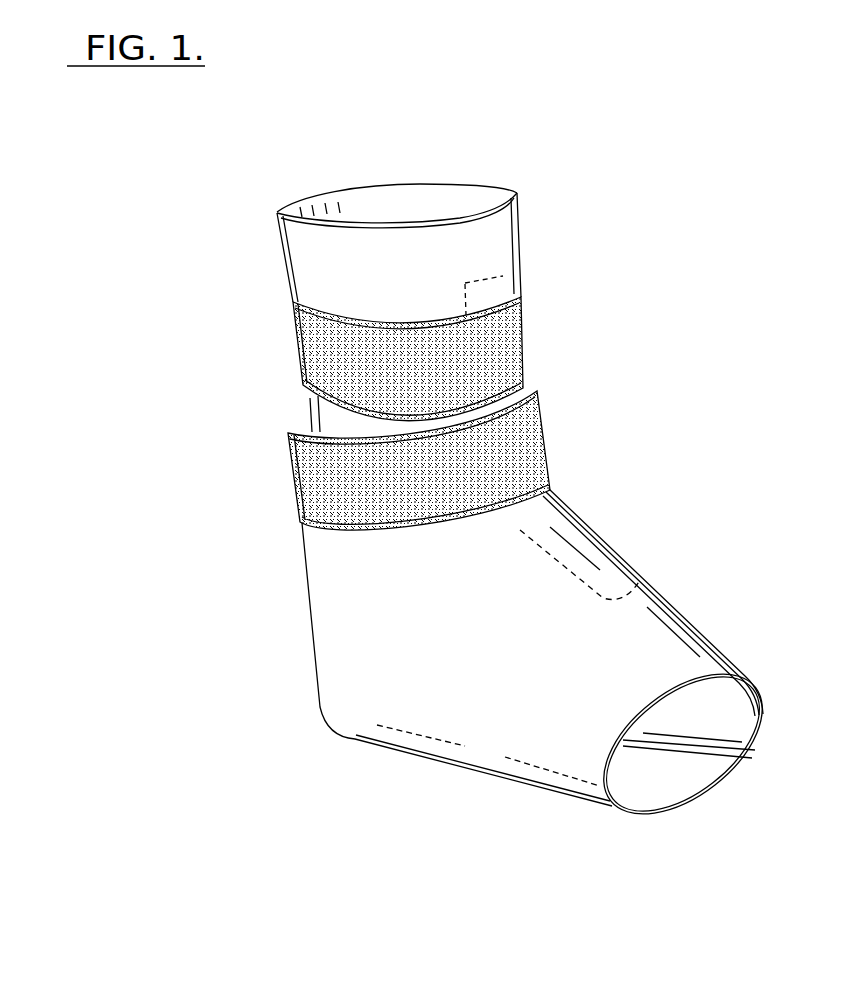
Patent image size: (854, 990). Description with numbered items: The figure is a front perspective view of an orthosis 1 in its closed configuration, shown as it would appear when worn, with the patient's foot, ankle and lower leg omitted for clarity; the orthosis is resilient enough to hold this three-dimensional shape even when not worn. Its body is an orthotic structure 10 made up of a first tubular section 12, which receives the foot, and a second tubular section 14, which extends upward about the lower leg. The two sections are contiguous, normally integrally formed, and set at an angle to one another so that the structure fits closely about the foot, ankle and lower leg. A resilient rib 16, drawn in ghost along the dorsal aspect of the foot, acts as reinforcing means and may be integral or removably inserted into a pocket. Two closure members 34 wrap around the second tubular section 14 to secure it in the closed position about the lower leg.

The orthosis 1 is at (172, 211).
The orthotic structure 10 is at (268, 655).
The first tubular section 12 is at (493, 737).
The second tubular section 14 is at (330, 288).
The resilient rib 16 is at (620, 578).
The closure members 34 is at (283, 362).